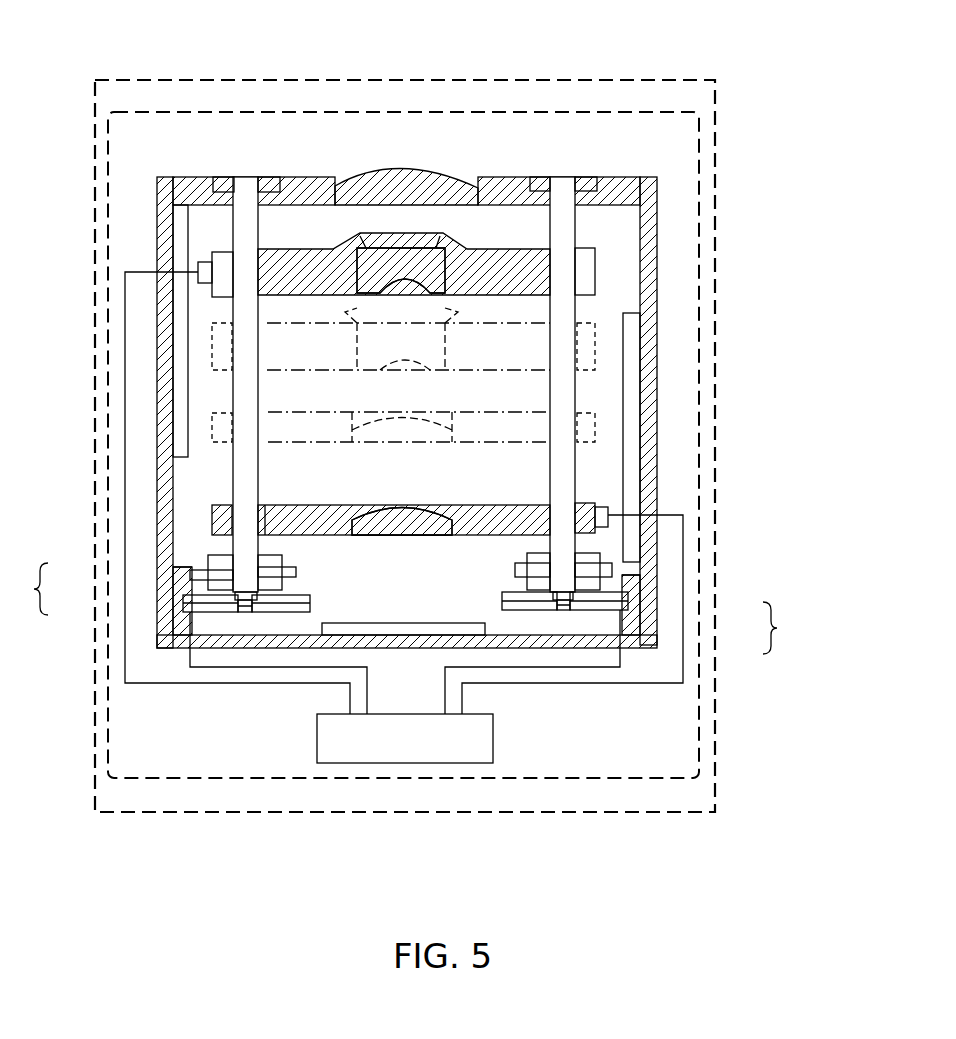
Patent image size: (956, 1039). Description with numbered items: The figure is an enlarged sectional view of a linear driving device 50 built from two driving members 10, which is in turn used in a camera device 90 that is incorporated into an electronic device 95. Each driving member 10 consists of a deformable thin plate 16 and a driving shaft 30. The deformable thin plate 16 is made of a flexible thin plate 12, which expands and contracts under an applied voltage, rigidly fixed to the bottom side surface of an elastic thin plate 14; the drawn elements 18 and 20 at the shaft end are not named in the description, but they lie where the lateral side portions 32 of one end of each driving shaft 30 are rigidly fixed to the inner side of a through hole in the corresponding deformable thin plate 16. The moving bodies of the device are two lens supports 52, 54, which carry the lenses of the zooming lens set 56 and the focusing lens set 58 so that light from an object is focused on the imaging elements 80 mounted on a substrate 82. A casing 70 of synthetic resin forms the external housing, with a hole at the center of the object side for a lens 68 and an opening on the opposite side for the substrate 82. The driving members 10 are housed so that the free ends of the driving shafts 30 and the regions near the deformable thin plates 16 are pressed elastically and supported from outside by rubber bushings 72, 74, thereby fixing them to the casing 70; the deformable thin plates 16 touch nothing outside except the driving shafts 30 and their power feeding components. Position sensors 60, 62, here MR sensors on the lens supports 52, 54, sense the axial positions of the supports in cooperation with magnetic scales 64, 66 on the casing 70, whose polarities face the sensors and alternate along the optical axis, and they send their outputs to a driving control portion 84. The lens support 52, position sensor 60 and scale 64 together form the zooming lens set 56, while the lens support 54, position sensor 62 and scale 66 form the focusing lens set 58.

The driving member 10 is at (223, 472).
The flexible thin plate 12 is at (183, 607).
The elastic thin plate 14 is at (177, 593).
The deformable thin plate 16 is at (406, 608).
The piezoelectric element 18 is at (235, 612).
The shaft fixing portion 20 is at (240, 598).
The driving shaft 30 is at (240, 432).
The lateral side portion 32 is at (248, 605).
The linear driving device 50 is at (187, 170).
The lens support 52 is at (220, 290).
The lens support 54 is at (592, 525).
The zooming lens set 56 is at (437, 178).
The focusing lens set 58 is at (442, 520).
The position sensor 60 is at (203, 268).
The position sensor 62 is at (608, 517).
The scale 64 is at (178, 230).
The scale 66 is at (632, 385).
The lens 68 is at (425, 248).
The casing 70 is at (648, 230).
The rubber bushing 72 is at (224, 180).
The rubber bushing 74 is at (207, 555).
The imaging element 80 is at (480, 630).
The substrate 82 is at (272, 643).
The driving control portion 84 is at (483, 750).
The camera device 90 is at (673, 110).
The electronic device 95 is at (620, 80).